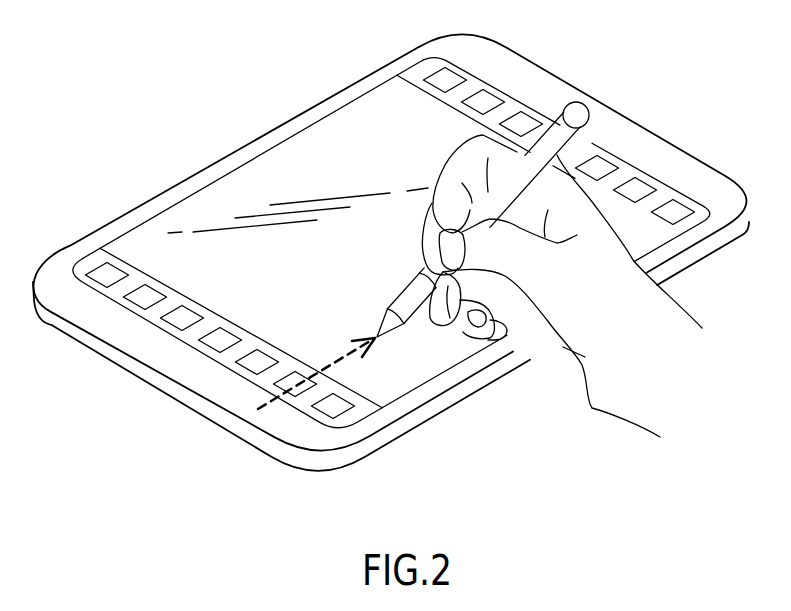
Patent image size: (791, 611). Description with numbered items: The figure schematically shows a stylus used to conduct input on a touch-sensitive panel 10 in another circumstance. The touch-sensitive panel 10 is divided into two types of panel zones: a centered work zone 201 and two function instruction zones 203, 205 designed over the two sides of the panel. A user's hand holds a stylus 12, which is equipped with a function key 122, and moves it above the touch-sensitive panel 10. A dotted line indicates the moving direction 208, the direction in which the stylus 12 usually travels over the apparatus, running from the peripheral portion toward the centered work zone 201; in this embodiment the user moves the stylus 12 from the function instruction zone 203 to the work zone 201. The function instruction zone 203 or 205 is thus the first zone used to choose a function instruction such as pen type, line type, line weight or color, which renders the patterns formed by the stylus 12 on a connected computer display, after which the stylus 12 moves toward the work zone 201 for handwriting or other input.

The touch-sensitive panel 10 is at (364, 68).
The stylus 12 is at (464, 189).
The function key 122 is at (430, 260).
The work zone 201 is at (312, 142).
The function instruction zone 203 is at (250, 345).
The function instruction zone 205 is at (625, 173).
The moving direction 208 is at (332, 352).